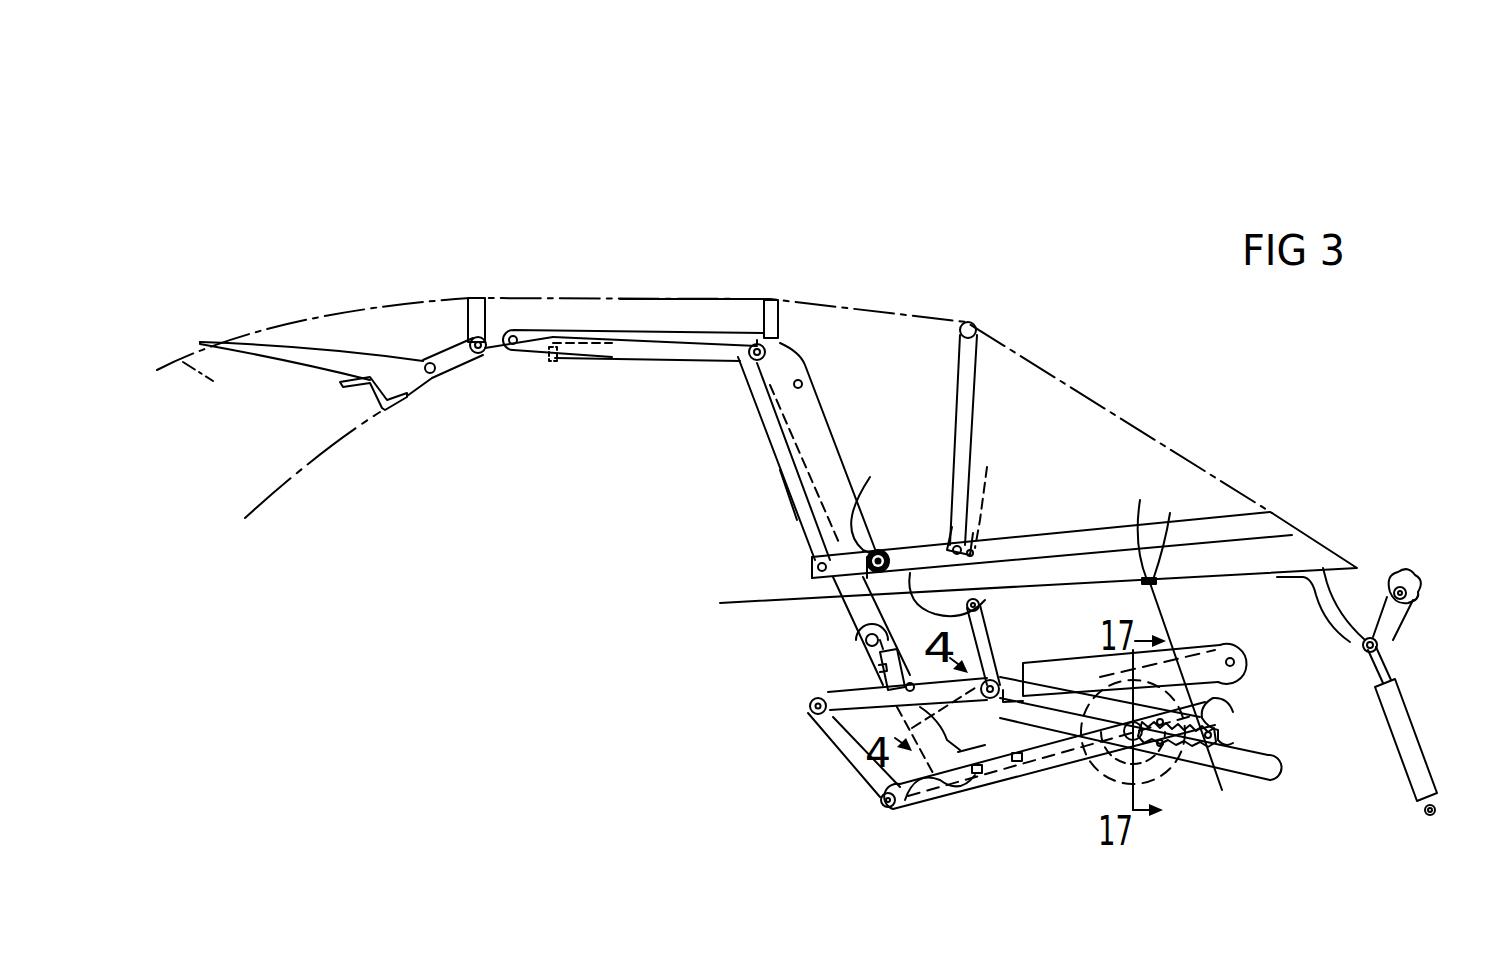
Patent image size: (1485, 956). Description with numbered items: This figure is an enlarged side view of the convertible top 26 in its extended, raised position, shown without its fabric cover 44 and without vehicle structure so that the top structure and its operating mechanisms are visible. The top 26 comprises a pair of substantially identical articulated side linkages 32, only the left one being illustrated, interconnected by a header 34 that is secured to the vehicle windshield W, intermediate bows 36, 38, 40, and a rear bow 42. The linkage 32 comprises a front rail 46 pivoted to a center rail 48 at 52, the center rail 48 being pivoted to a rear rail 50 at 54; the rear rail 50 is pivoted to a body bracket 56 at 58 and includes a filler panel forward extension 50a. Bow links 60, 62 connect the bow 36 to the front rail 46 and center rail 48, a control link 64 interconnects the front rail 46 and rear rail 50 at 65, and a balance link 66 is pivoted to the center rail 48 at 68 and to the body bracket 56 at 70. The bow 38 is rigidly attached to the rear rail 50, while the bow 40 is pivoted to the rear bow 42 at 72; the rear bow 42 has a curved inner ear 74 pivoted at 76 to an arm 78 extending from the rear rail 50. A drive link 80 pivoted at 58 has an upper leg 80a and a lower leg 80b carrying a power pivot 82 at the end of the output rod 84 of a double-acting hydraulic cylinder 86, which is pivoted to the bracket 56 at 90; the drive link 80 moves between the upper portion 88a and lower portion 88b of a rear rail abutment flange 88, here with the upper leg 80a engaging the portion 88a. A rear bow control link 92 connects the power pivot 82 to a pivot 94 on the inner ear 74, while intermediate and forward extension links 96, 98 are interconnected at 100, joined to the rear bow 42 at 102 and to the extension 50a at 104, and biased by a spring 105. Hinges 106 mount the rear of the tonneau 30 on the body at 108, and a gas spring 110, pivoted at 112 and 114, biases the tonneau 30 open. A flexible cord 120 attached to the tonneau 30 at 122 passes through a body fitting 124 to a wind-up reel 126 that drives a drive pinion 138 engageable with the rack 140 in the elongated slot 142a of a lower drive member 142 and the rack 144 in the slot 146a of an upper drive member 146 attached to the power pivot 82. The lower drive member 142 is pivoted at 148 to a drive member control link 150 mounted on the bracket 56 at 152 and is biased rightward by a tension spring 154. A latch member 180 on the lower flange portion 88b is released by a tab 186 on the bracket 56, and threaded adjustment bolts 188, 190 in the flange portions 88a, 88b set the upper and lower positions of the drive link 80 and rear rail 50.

The vehicle windshield W is at (183, 362).
The top 26 is at (841, 292).
The tonneau 30 is at (1333, 613).
The articulated side linkage 32 is at (708, 462).
The header or #1 bow 34 is at (248, 340).
The #2 bow 36 is at (477, 315).
The #3 bow 38 is at (771, 308).
The #4 bow 40 is at (968, 373).
The rear or #5 bow 42 is at (1280, 523).
The fabric cover 44 is at (653, 300).
The front rail 46 is at (460, 373).
The center rail 48 is at (662, 362).
The rear rail 50 is at (813, 420).
The filler panel forward extension 50a is at (797, 522).
The pivot 52 is at (551, 355).
The pivot 54 is at (801, 386).
The body bracket 56 is at (828, 682).
The pivot 58 is at (810, 707).
The bow link 60 is at (443, 360).
The bow link 62 is at (525, 357).
The control link 64 is at (632, 350).
The pivot 65 is at (758, 335).
The balance link 66 is at (754, 397).
The pivot 68 is at (733, 363).
The pivot 70 is at (864, 636).
The pivot 72 is at (958, 488).
The curved inner ear 74 is at (980, 606).
The pivot 76 is at (990, 577).
The arm 78 is at (978, 625).
The drive link 80 is at (837, 740).
The upper leg 80a is at (888, 663).
The lower leg 80b is at (980, 750).
The power pivot 82 is at (1067, 743).
The output rod 84 is at (1023, 677).
The double-acting hydraulic cylinder 86 is at (1093, 668).
The rear rail abutment flange 88 is at (885, 708).
The upper portion of abutment flange 88a is at (880, 653).
The lower portion of abutment flange 88b is at (927, 793).
The pivot 90 is at (1232, 655).
The #5 bow control link 92 is at (980, 668).
The pivot 94 is at (962, 546).
The intermediate extension link 96 is at (908, 565).
The forward extension link 98 is at (820, 560).
The pivot 100 is at (877, 552).
The pivot 102 is at (990, 462).
The pivot 104 is at (815, 567).
The spring 105 is at (869, 501).
The hinge 106 is at (1388, 575).
The pivot 108 is at (1408, 593).
The gas spring 110 is at (1403, 740).
The pivot 112 is at (1428, 815).
The pivot 114 is at (1380, 647).
The flexible cord 120 is at (1157, 583).
The cord attachment 122 is at (1142, 505).
The body fitting 124 is at (1172, 512).
The wind-up reel 126 is at (1160, 773).
The drive pinion 138 is at (1133, 770).
The rack 140 is at (1200, 773).
The lower drive member 142 is at (1240, 713).
The elongated slot 142a is at (1230, 707).
The rack 144 is at (1227, 740).
The upper drive member 146 is at (1290, 760).
The slot 146a is at (1283, 779).
The pivot 148 is at (897, 820).
The drive member control link 150 is at (860, 777).
The pivot 152 is at (815, 712).
The tension spring 154 is at (1030, 773).
The latch member 180 is at (880, 807).
The tab 186 is at (830, 767).
The threaded adjustment bolt 188 is at (838, 672).
The threaded adjustment bolt 190 is at (980, 787).